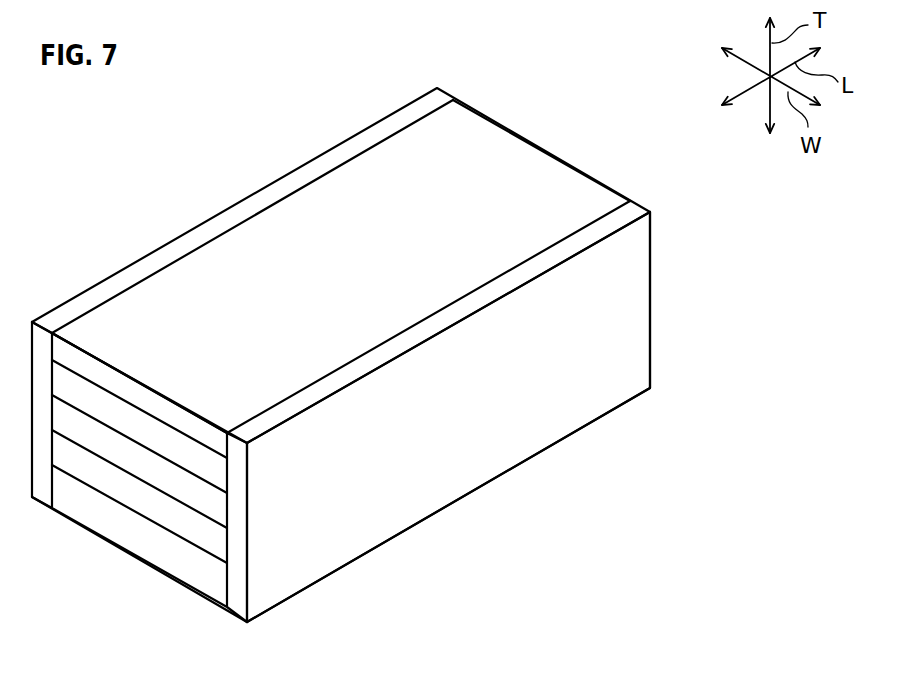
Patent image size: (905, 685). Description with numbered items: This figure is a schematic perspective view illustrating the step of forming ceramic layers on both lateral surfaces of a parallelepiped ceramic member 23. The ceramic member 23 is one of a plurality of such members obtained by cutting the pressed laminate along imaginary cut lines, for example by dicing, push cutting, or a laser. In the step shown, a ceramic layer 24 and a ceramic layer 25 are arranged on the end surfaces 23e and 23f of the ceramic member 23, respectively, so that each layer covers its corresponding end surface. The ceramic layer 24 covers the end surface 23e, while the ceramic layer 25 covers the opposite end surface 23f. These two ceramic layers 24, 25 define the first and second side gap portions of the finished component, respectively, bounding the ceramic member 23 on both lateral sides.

The ceramic member 23 is at (508, 125).
The end surface 23e is at (218, 233).
The end surface 23f is at (430, 318).
The ceramic layer 24 is at (317, 158).
The ceramic layer 25 is at (599, 368).